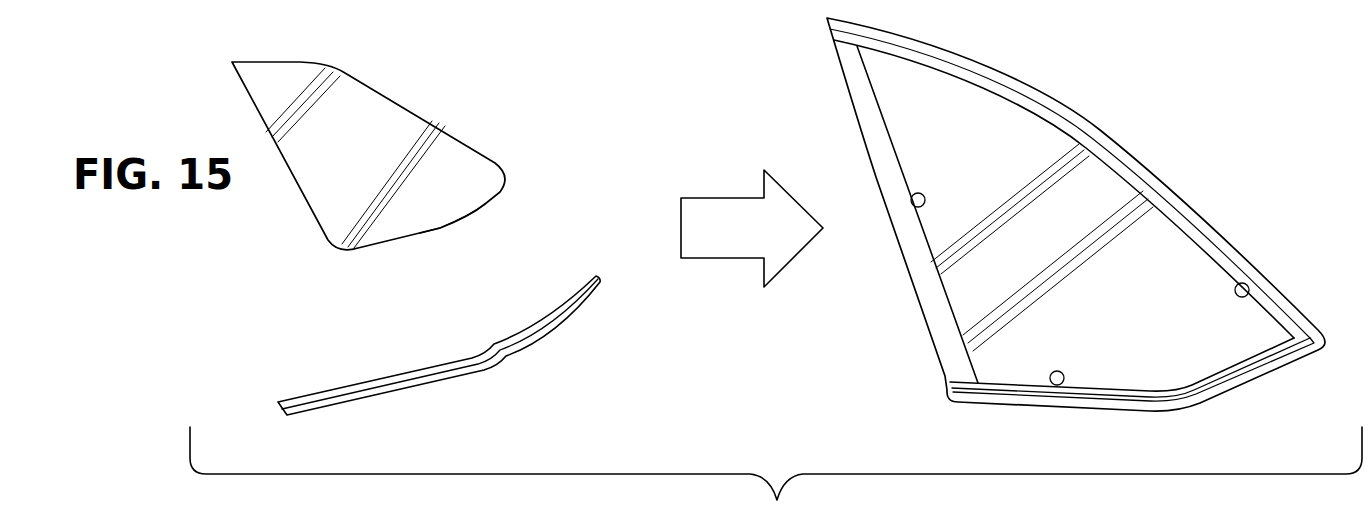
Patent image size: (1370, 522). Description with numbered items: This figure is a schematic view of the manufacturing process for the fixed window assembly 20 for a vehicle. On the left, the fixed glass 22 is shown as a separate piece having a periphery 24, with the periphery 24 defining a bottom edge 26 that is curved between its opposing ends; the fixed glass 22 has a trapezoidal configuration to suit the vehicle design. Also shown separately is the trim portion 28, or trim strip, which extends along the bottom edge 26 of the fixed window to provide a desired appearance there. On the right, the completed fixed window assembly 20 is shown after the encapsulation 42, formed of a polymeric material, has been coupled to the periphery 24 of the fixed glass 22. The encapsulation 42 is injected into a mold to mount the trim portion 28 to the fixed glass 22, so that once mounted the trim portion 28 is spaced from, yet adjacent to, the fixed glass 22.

The fixed window assembly 20 is at (1055, 214).
The fixed glass 22 is at (384, 110).
The periphery 24 is at (300, 62).
The bottom edge 26 is at (423, 238).
The trim portion 28 is at (357, 360).
The encapsulation 42 is at (876, 143).